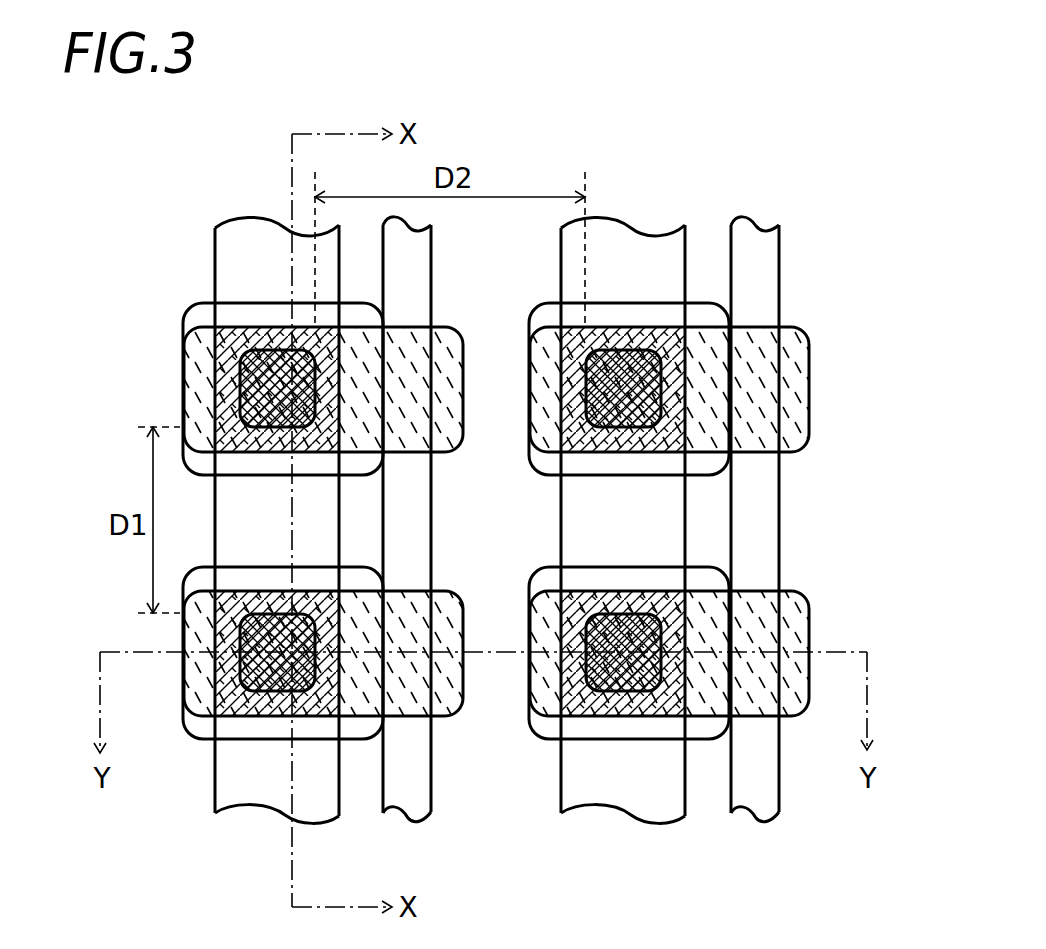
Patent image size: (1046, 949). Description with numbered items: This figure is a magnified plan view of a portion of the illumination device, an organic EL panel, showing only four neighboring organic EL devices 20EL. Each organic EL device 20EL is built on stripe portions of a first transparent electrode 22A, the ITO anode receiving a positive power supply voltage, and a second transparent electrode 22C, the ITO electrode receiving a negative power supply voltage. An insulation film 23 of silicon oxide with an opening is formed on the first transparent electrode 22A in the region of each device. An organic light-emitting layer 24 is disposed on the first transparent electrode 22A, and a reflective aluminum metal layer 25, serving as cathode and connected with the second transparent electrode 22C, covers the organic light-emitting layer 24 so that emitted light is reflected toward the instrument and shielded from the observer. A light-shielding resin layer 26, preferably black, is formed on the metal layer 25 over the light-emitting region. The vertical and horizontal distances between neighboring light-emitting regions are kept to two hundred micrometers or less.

The organic EL device 20EL is at (177, 270).
The first transparent electrode 22A is at (253, 795).
The second transparent electrode 22C is at (407, 807).
The insulation film 23 is at (247, 308).
The organic light-emitting layer 24 is at (220, 360).
The metal layer 25 is at (203, 375).
The resin layer 26 is at (237, 395).